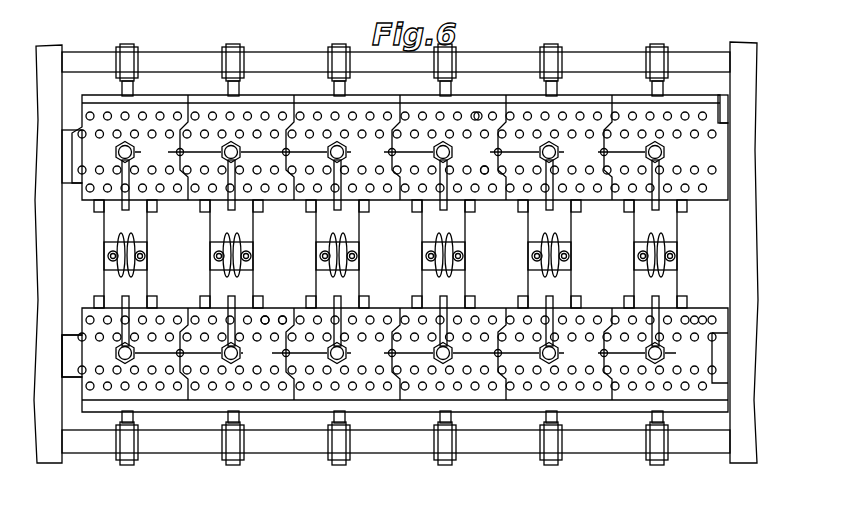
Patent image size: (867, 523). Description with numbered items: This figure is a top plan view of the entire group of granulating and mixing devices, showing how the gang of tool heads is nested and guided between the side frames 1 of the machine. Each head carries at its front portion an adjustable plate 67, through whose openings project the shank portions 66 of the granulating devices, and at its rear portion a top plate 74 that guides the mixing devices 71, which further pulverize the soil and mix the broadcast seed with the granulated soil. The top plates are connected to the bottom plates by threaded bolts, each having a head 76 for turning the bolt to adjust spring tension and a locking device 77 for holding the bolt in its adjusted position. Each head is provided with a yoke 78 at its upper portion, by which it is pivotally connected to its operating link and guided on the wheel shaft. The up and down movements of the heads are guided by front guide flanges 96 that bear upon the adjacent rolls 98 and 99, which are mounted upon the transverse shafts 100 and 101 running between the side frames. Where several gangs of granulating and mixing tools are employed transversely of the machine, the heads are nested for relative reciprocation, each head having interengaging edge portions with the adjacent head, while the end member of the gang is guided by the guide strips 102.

The side frames 1 is at (45, 212).
The shank portions 66 is at (478, 121).
The adjustable plate 67 is at (490, 104).
The mixing devices 71 is at (281, 325).
The top plate 74 is at (475, 398).
The head 76 is at (396, 254).
The locking device 77 is at (233, 298).
The yoke 78 is at (137, 230).
The front guide flange 96 is at (656, 88).
The rolls 98 is at (128, 53).
The rolls 99 is at (240, 467).
The transverse shaft 100 is at (284, 68).
The transverse shaft 101 is at (396, 454).
The guide strips 102 is at (65, 130).